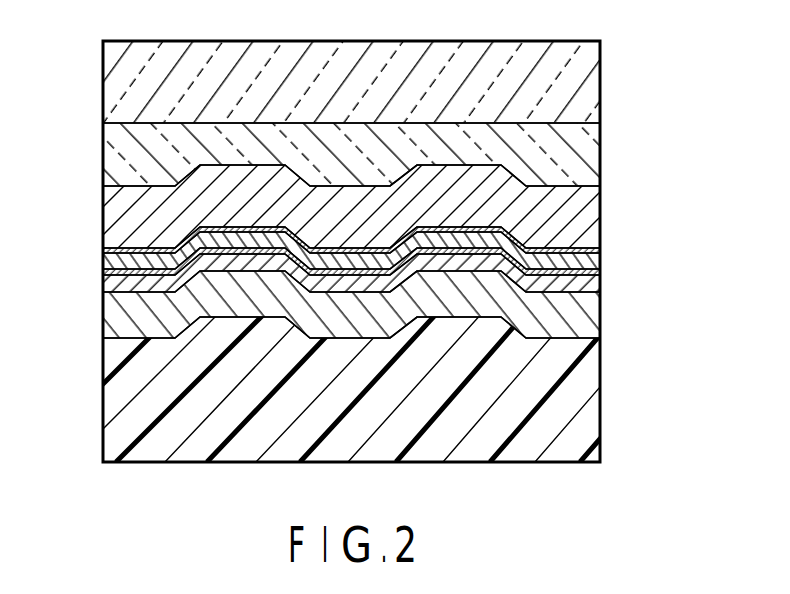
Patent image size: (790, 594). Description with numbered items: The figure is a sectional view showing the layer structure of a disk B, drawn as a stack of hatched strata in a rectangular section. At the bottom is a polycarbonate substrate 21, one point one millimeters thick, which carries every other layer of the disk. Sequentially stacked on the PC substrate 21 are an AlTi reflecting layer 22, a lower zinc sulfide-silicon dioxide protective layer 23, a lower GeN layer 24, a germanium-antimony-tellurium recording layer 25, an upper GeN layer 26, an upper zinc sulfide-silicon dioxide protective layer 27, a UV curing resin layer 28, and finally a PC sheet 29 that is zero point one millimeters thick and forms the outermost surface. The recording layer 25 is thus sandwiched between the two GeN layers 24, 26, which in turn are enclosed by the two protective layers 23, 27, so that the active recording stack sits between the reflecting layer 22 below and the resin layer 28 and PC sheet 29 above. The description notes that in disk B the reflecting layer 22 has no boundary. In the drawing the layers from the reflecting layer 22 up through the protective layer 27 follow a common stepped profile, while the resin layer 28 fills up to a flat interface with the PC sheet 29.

The PC substrate 21 is at (583, 391).
The AlTi reflecting layer 22 is at (583, 313).
The ZnS(80)-SiO2(20) protective layer 23 is at (583, 282).
The GeN layer 24 is at (103, 274).
The Ge40Sb8Te52 recording layer 25 is at (583, 259).
The GeN layer 26 is at (103, 251).
The ZnS(80)-SiO2(20) protective layer 27 is at (583, 215).
The UV curing resin layer 28 is at (583, 155).
The PC sheet 29 is at (583, 82).